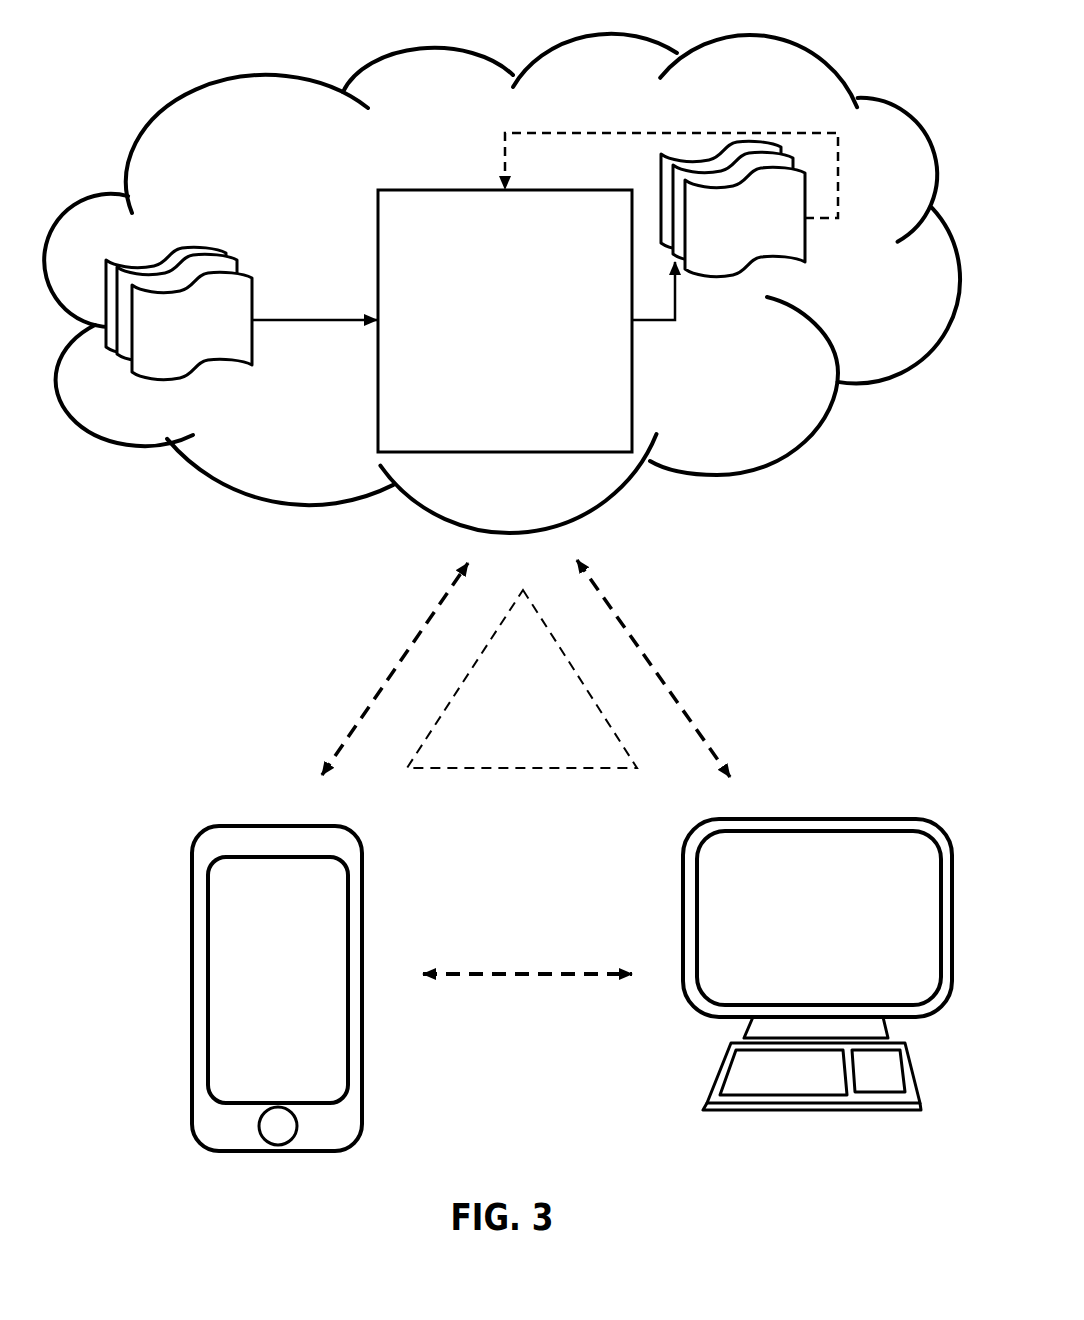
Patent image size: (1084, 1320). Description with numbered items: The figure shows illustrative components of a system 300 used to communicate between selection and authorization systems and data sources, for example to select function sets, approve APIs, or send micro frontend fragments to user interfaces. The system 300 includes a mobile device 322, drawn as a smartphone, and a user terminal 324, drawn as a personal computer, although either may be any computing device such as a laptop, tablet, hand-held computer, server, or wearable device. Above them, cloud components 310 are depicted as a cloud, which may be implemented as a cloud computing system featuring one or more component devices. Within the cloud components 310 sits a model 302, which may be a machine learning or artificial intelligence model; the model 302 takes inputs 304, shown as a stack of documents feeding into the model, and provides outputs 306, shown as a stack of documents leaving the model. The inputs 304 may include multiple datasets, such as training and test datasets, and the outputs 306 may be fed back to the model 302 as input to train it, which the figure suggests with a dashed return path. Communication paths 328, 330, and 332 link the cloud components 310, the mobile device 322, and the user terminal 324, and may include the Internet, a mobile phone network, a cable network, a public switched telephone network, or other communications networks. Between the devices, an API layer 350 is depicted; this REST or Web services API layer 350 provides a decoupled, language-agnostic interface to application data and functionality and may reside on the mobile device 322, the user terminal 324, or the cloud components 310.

The system 300 is at (518, 30).
The model 302 is at (524, 334).
The inputs 304 is at (199, 246).
The outputs 306 is at (786, 252).
The cloud components 310 is at (803, 97).
The mobile device 322 is at (268, 805).
The user terminal 324 is at (811, 810).
The communication path 328 is at (350, 657).
The communication path 330 is at (733, 628).
The communication path 332 is at (517, 945).
The API layer 350 is at (544, 705).